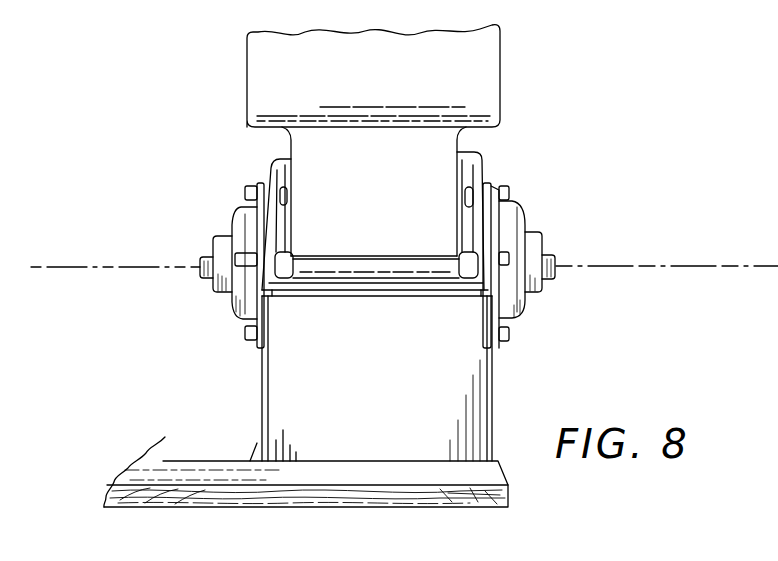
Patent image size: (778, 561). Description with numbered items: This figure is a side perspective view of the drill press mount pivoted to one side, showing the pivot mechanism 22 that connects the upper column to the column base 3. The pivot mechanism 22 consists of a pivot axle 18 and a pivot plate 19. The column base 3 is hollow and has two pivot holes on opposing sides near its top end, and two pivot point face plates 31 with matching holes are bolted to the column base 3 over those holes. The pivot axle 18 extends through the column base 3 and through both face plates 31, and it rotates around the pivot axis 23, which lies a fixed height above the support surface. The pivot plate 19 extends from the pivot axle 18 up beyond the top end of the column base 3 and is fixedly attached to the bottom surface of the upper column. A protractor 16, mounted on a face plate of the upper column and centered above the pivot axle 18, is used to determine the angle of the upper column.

The column base 3 is at (325, 370).
The protractor 16 is at (480, 77).
The pivot axle 18 is at (200, 267).
The pivot plate 19 is at (392, 205).
The pivot mechanism 22 is at (458, 211).
The pivot axis 23 is at (80, 267).
The pivot point face plates 31 is at (233, 308).